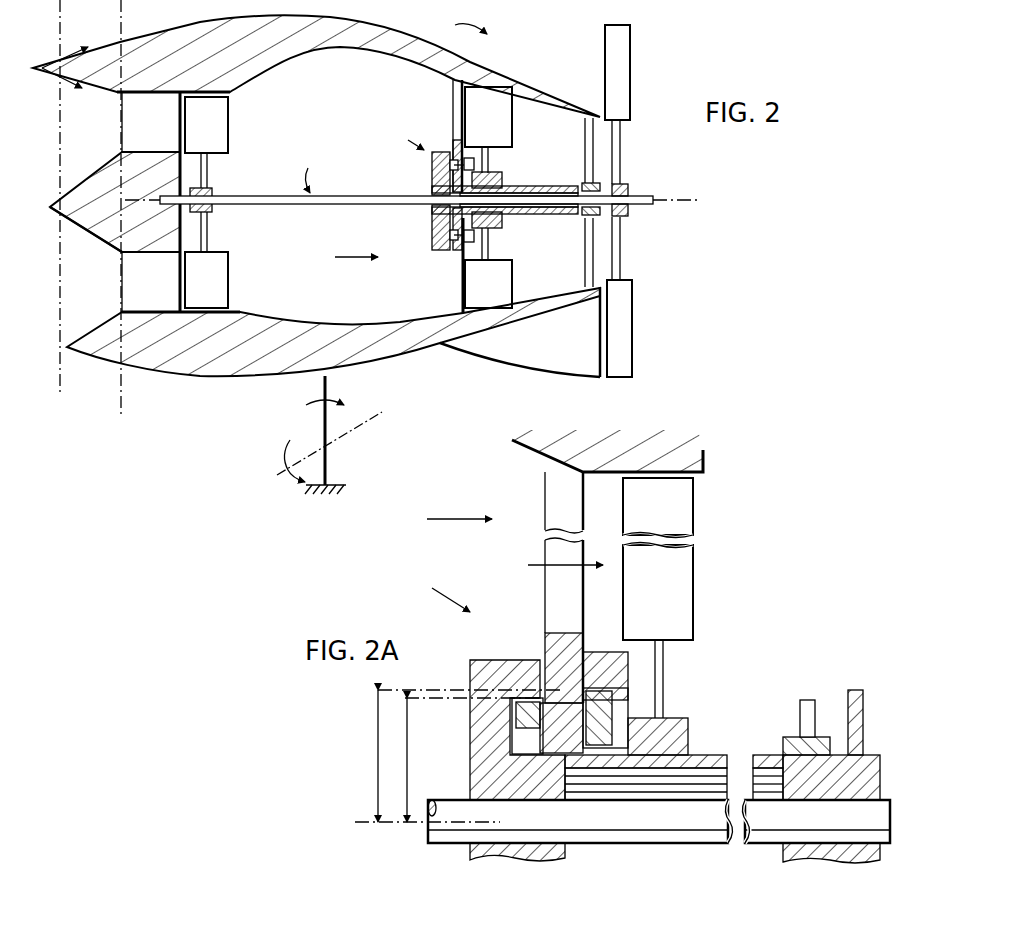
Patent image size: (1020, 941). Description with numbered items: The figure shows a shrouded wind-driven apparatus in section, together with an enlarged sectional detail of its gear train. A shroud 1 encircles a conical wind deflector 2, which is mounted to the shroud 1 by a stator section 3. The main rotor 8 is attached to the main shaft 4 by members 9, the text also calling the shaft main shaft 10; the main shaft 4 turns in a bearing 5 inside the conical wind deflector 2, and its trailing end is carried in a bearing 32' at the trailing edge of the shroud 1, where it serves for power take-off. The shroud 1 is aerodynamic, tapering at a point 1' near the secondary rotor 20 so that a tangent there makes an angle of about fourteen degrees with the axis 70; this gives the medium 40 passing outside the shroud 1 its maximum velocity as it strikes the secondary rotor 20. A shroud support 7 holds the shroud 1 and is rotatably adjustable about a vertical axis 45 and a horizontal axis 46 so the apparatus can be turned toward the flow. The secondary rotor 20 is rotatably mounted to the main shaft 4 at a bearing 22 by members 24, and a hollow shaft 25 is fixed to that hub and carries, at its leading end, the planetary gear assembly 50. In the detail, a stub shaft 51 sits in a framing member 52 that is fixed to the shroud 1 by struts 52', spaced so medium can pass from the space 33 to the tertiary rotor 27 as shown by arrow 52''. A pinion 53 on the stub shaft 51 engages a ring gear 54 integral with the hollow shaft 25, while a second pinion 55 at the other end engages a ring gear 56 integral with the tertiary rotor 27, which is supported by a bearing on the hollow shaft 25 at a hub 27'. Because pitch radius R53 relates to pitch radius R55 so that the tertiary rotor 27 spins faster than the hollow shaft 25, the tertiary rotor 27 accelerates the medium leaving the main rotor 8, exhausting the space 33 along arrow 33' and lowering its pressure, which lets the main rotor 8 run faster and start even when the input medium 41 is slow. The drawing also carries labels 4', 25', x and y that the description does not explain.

In FIG. 2, the shroud 1 is at (316, 58).
In FIG. 2A, the shroud 1 is at (601, 451).
In FIG. 2, the point 1' is at (584, 177).
In FIG. 2, the conical wind deflector 2 is at (100, 224).
In FIG. 2, the stator section 3 is at (136, 130).
In FIG. 2, the main shaft 4 is at (410, 218).
In FIG. 2A, the main shaft 4 is at (657, 836).
In FIG. 2, the shaft rotation 4' is at (318, 170).
In FIG. 2, the bearing 5 is at (170, 190).
In FIG. 2, the shroud support 7 is at (328, 387).
In FIG. 2, the main rotor 8 is at (214, 137).
In FIG. 2, the members 9 is at (208, 170).
In FIG. 2, the main shaft 10 is at (214, 192).
In FIG. 2, the secondary rotor 20 is at (626, 99).
In FIG. 2, the bearing 22 is at (630, 187).
In FIG. 2A, the bearing 22 is at (873, 770).
In FIG. 2, the members 24 is at (622, 158).
In FIG. 2A, the members 24 is at (856, 722).
In FIG. 2, the hollow shaft 25 is at (576, 233).
In FIG. 2A, the hollow shaft 25 is at (660, 807).
In FIG. 2, the flange ring 25' is at (505, 179).
In FIG. 2, the tertiary rotor 27 is at (506, 130).
In FIG. 2A, the tertiary rotor 27 is at (675, 598).
In FIG. 2, the hub 27' is at (511, 260).
In FIG. 2A, the hub 27' is at (669, 719).
In FIG. 2, the bearing 32' is at (581, 180).
In FIG. 2A, the bearing 32' is at (799, 724).
In FIG. 2, the space 33 is at (321, 111).
In FIG. 2A, the space 33 is at (526, 550).
In FIG. 2, the arrow 33' is at (355, 272).
In FIG. 2A, the arrow 33' is at (459, 506).
In FIG. 2, the medium 40 is at (478, 18).
In FIG. 2, the input medium 41 is at (60, 61).
In FIG. 2, the vertical axis 45 is at (328, 462).
In FIG. 2, the horizontal axis 46 is at (358, 430).
In FIG. 2, the planetary gear assembly 50 is at (406, 138).
In FIG. 2A, the planetary gear assembly 50 is at (440, 588).
In FIG. 2, the stub shaft 51 is at (432, 188).
In FIG. 2A, the stub shaft 51 is at (546, 652).
In FIG. 2, the framing member 52 is at (440, 181).
In FIG. 2A, the framing member 52 is at (579, 650).
In FIG. 2, the struts 52' is at (438, 136).
In FIG. 2A, the struts 52' is at (546, 502).
In FIG. 2A, the arrow 52'' is at (545, 585).
In FIG. 2, the pinion 53 is at (431, 166).
In FIG. 2A, the pinion 53 is at (527, 713).
In FIG. 2, the ring gear 54 is at (441, 250).
In FIG. 2A, the ring gear 54 is at (523, 697).
In FIG. 2, the second pinion 55 is at (478, 164).
In FIG. 2A, the second pinion 55 is at (615, 715).
In FIG. 2, the ring gear 56 is at (465, 258).
In FIG. 2A, the ring gear 56 is at (593, 684).
In FIG. 2, the axis 70 is at (120, 250).
In FIG. 2A, the axis 70 is at (400, 828).
In FIG. 2, the x axis x is at (59, 207).
In FIG. 2, the y axis y is at (120, 215).
In FIG. 2A, the pitch radius R55 is at (360, 756).
In FIG. 2A, the pitch radius R53 is at (427, 760).